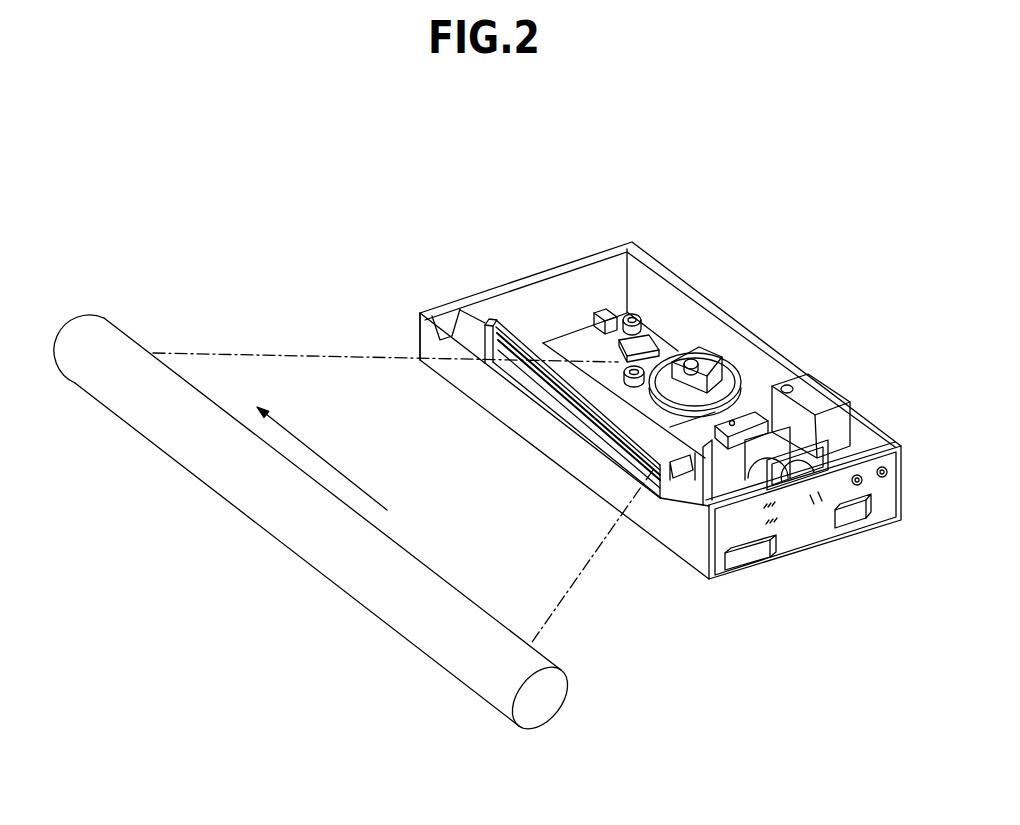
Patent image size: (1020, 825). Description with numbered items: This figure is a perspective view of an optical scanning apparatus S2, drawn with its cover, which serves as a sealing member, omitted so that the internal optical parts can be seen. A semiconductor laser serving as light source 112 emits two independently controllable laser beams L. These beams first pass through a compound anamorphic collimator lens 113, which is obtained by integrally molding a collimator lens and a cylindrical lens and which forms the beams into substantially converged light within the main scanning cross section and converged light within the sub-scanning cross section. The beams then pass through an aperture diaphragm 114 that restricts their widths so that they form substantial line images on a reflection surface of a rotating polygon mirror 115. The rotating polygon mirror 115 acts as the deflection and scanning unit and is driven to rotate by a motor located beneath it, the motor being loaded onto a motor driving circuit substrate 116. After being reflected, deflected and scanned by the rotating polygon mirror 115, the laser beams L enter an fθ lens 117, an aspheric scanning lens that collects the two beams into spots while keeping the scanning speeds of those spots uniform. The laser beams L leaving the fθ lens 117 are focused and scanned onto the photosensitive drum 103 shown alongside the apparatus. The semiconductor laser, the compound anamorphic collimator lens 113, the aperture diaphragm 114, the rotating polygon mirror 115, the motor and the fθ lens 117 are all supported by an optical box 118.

The optical scanning apparatus S2 is at (788, 232).
The photosensitive drum 103 is at (293, 525).
The semiconductor laser (light source) 112 is at (818, 508).
The compound anamorphic collimator lens 113 is at (790, 400).
The aperture diaphragm 114 is at (740, 398).
The rotating polygon mirror 115 is at (712, 358).
The motor driving circuit substrate 116 is at (647, 333).
The fθ lens (scanning lens) 117 is at (537, 343).
The optical box 118 is at (617, 268).
The laser beams (light beams) L is at (350, 352).